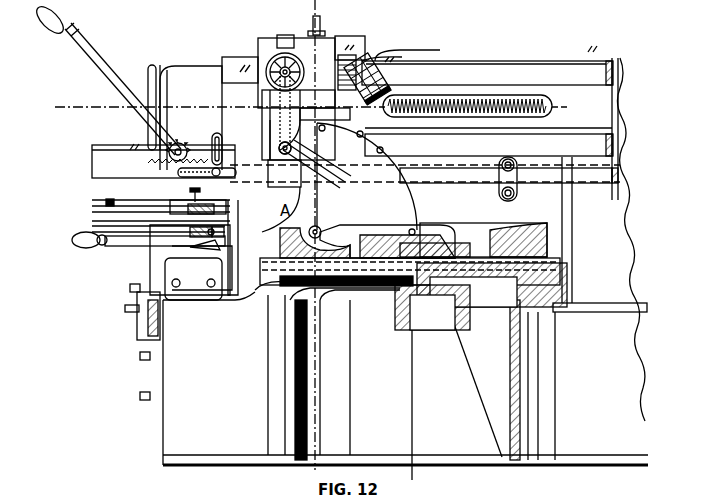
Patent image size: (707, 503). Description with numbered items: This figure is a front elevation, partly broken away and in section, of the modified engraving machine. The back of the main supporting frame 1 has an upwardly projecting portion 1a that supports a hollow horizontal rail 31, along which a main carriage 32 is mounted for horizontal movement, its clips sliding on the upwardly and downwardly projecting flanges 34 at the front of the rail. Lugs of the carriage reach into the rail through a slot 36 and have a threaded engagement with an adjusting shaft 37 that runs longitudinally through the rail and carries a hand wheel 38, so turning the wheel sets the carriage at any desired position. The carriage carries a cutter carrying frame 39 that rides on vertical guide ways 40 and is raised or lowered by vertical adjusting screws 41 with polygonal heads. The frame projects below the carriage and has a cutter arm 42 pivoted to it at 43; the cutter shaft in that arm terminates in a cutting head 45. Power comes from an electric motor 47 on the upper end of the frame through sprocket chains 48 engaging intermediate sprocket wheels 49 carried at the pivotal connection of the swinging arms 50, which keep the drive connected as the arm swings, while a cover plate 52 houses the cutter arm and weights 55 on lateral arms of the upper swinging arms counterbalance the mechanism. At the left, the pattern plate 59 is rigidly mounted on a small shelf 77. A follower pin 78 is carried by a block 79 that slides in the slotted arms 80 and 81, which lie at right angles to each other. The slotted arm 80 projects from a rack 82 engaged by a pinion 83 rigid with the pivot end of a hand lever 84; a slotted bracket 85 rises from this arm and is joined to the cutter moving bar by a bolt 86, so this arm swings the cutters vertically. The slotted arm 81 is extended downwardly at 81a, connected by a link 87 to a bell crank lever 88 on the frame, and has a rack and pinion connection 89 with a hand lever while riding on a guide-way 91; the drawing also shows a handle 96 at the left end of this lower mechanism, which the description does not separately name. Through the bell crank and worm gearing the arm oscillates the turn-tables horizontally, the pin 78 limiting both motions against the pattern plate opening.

The main supporting frame 1 is at (168, 430).
The upwardly projecting portion 1a is at (165, 246).
The hollow horizontal rail portion 31 is at (196, 76).
The main carriage 32 is at (437, 74).
The flanges 34 is at (598, 60).
The slot 36 is at (489, 136).
The adjusting shaft 37 is at (480, 105).
The hand wheel 38 is at (151, 70).
The cutter carrying frame 39 is at (339, 171).
The vertical guide ways 40 is at (358, 45).
The vertical adjusting screws 41 is at (344, 62).
The cutter arm 42 is at (311, 226).
The pivotal connection 43 is at (322, 226).
The cutting head 45 is at (413, 294).
The electric motor 47 is at (270, 52).
The sprocket chains 48 is at (276, 119).
The intermediate sprocket wheels 49 is at (315, 162).
The swinging arms 50 is at (270, 106).
The cover plate 52 is at (420, 204).
The weights 55 is at (370, 72).
The pattern plate 59 is at (130, 214).
The shelf 77 is at (135, 222).
The follower pin 78 is at (192, 190).
The block 79 is at (100, 204).
The slotted arm 80 is at (218, 211).
The slotted arm 81 is at (108, 202).
The downwardly extended arm 81a is at (222, 230).
The rack 82 is at (150, 171).
The pinion 83 is at (183, 143).
The hand lever 84 is at (80, 54).
The slotted bracket 85 is at (216, 133).
The bolt 86 is at (230, 182).
The link 87 is at (258, 298).
The bell crank lever 88 is at (280, 298).
The rack and pinion connection 89 is at (213, 242).
The guide-way 91 is at (215, 295).
The handle 96 is at (103, 244).